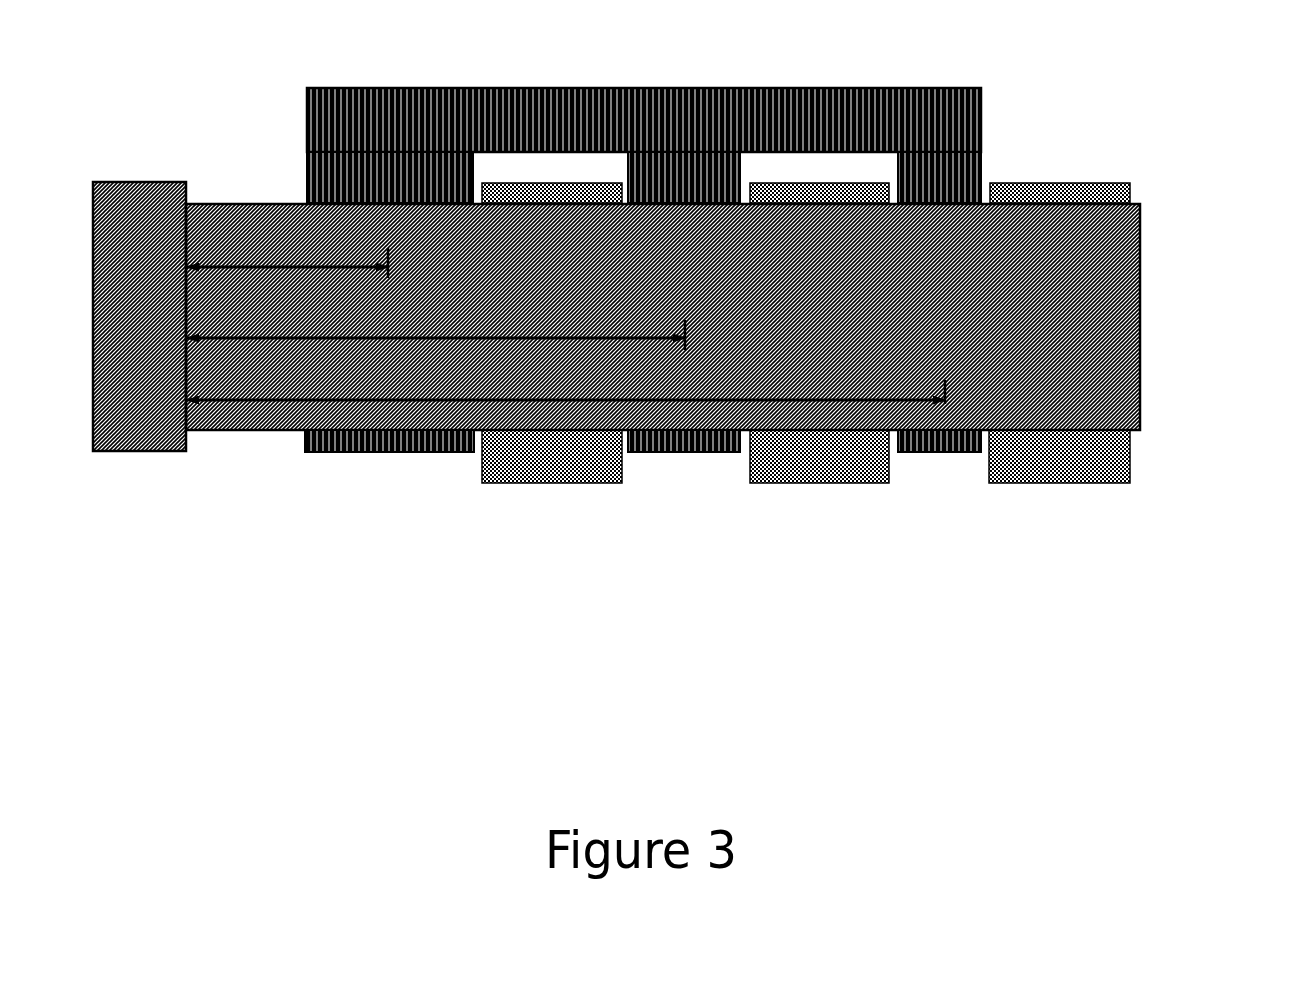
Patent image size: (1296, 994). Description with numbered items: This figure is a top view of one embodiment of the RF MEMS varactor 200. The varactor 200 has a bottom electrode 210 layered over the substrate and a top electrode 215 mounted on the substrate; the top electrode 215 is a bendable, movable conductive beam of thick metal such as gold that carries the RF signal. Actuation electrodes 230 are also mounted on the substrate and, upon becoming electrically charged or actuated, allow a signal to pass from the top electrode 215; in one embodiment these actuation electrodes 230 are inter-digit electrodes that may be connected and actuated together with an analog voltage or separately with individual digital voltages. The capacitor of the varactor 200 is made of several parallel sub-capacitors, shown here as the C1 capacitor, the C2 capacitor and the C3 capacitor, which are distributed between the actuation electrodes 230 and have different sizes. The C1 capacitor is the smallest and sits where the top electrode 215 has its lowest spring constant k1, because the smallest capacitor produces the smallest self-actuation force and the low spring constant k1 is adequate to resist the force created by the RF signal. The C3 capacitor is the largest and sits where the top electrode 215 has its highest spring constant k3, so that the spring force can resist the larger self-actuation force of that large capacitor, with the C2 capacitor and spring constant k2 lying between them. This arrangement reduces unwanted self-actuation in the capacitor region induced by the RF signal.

The RF MEMS varactor 200 is at (139, 275).
The bottom electrode 210 is at (946, 86).
The top electrode 215 is at (1144, 258).
The actuation electrodes 230 is at (790, 488).
The C1 capacitor C1 is at (983, 168).
The C2 capacitor C2 is at (628, 175).
The C3 capacitor C3 is at (307, 178).
The lowest spring constant k1 is at (566, 389).
The spring constant k2 is at (436, 330).
The highest spring constant k3 is at (287, 258).